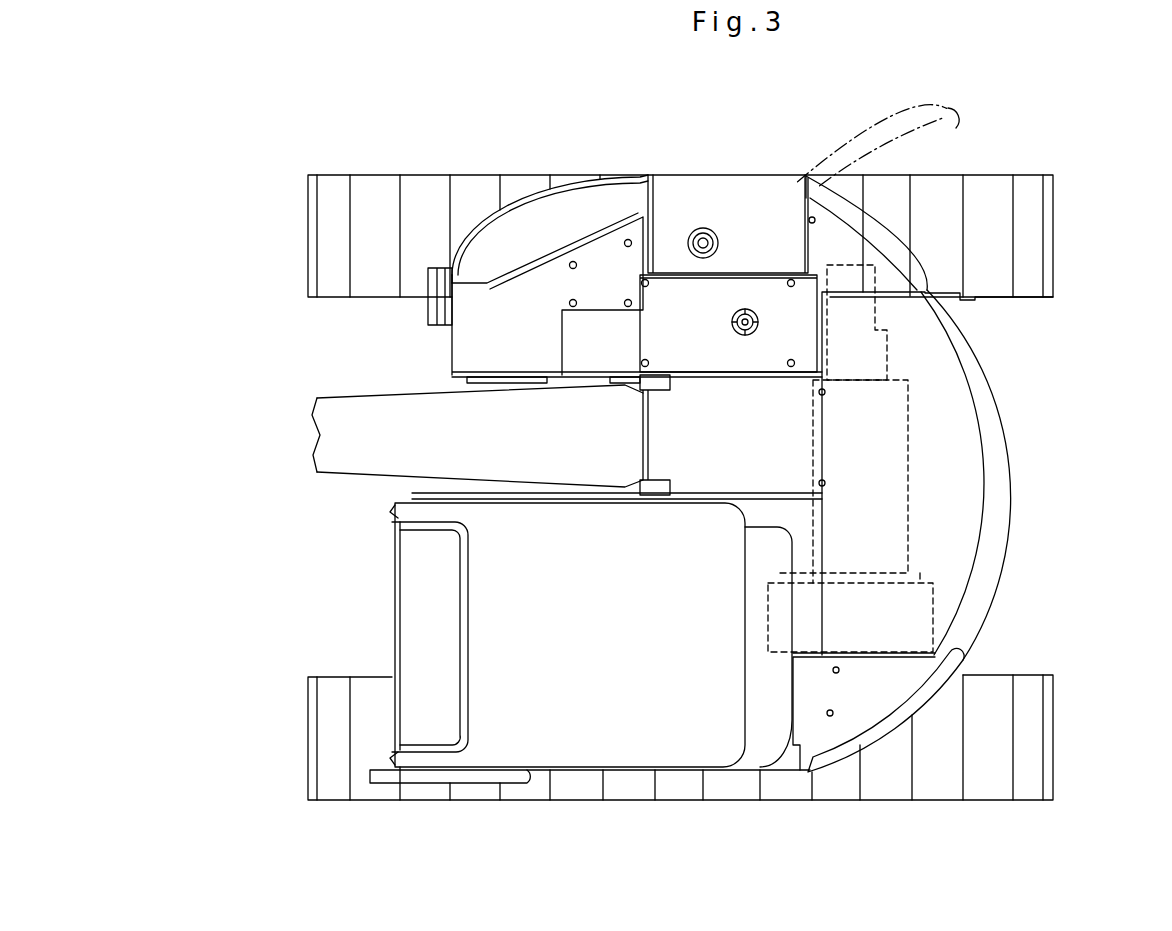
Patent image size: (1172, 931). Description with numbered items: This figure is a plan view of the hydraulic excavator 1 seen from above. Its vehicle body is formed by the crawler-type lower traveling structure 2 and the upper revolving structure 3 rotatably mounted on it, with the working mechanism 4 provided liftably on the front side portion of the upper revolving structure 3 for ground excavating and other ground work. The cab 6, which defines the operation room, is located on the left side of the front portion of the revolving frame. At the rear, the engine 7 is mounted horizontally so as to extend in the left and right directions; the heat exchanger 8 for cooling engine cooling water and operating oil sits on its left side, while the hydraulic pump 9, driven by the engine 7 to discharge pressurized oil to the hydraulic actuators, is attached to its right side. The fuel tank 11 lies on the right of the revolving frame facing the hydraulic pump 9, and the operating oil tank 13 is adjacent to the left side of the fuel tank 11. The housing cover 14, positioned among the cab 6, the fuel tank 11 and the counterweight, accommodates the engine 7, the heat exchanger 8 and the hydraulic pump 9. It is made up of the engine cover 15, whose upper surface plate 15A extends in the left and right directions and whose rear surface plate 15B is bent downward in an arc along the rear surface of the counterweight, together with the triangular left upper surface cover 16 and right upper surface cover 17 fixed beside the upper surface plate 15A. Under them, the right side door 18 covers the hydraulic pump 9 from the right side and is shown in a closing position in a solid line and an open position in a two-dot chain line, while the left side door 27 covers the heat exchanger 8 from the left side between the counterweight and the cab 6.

The hydraulic excavator 1 is at (318, 565).
The lower traveling structure 2 is at (420, 205).
The upper revolving structure 3 is at (537, 198).
The working mechanism 4 is at (340, 437).
The cab 6 is at (630, 740).
The engine 7 is at (897, 473).
The heat exchanger 8 is at (912, 618).
The hydraulic pump 9 is at (865, 318).
The fuel tank 11 is at (753, 205).
The operating oil tank 13 is at (672, 305).
The housing cover 14 is at (996, 382).
The engine cover 15 is at (930, 515).
The upper surface plate 15A is at (969, 475).
The rear surface plate 15B is at (990, 417).
The left upper surface cover 16 is at (853, 705).
The right upper surface cover 17 is at (838, 233).
The right side door 18 is at (925, 107).
The left side door 27 is at (890, 722).